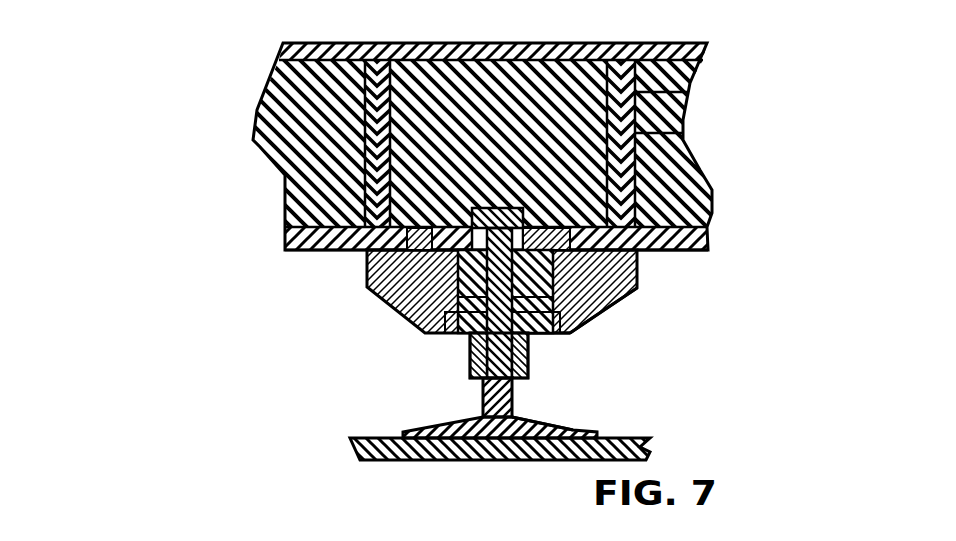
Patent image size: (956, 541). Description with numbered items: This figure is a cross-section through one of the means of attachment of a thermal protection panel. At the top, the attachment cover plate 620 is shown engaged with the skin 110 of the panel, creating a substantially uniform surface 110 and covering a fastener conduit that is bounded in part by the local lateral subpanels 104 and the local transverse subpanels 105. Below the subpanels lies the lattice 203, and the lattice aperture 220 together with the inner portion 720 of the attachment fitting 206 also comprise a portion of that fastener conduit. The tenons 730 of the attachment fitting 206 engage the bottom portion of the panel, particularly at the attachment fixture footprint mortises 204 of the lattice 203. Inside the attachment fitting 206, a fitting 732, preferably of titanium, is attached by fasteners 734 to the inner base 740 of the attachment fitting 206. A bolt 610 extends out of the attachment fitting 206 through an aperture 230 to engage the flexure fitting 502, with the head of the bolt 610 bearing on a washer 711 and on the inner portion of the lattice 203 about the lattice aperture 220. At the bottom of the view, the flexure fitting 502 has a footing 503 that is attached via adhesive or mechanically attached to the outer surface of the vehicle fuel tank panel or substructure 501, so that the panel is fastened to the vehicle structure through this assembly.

The skin 110 is at (352, 43).
The attachment cover plate 620 is at (525, 43).
The local lateral subpanels 104 is at (272, 78).
The local transverse subpanels 105 is at (285, 176).
The lattice 203 is at (287, 249).
The attachment fixture footprint mortises 204 is at (665, 255).
The lattice aperture 220 is at (367, 277).
The tenons 730 is at (637, 263).
The washer 711 is at (628, 298).
The attachment fitting 206 is at (607, 308).
The inner portion of the attachment fitting 720 is at (600, 314).
The fasteners 734 is at (423, 323).
The aperture 230 is at (468, 350).
The flexure fitting 502 is at (468, 366).
The inner base of the attachment fitting 740 is at (530, 353).
The fitting 732 is at (468, 378).
The bolt 610 is at (540, 378).
The footing 503 is at (403, 432).
The vehicle fuel tank panel or substructure 501 is at (350, 440).